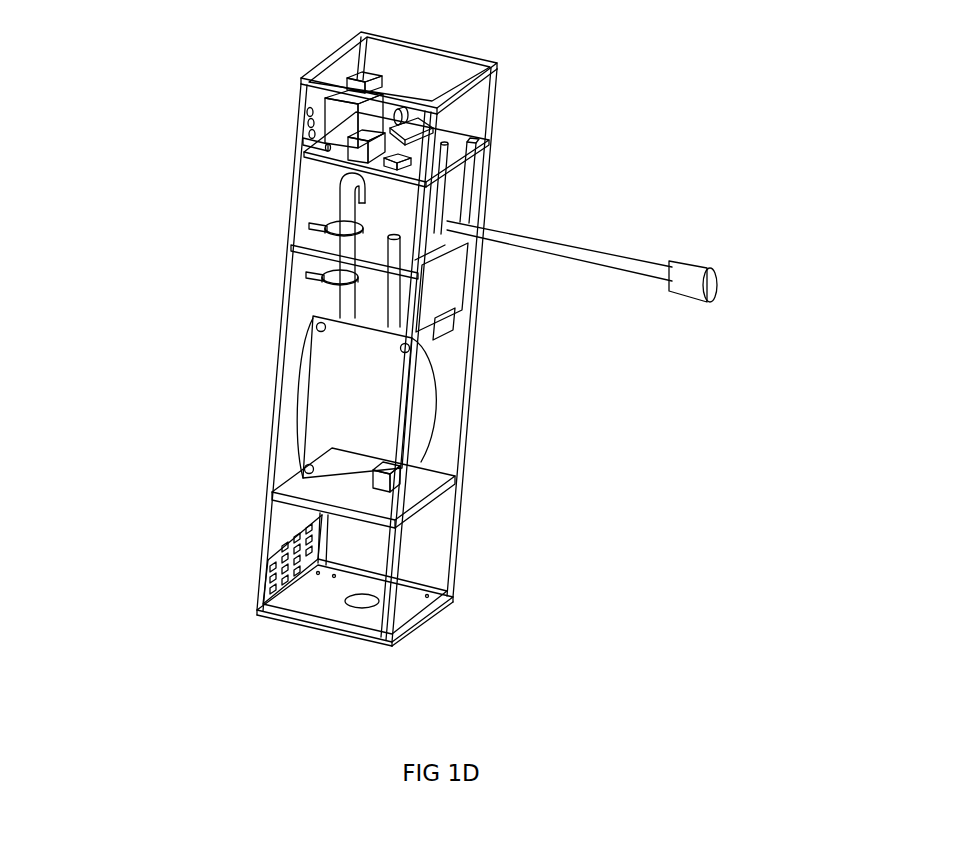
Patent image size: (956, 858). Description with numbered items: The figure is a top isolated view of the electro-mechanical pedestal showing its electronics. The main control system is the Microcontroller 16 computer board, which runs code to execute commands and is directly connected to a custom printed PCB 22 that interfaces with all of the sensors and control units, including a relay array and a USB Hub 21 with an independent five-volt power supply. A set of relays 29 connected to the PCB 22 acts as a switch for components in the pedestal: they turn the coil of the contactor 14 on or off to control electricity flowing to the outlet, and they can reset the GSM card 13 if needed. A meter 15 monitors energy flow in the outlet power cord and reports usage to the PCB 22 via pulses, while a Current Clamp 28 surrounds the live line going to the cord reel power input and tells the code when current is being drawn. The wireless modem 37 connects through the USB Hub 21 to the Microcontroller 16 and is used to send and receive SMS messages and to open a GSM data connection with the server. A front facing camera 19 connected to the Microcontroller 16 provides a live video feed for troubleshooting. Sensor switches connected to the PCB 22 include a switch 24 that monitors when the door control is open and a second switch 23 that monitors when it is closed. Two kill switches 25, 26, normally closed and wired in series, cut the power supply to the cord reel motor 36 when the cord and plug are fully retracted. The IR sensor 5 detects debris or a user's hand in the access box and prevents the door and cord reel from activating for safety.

The IR sensor 5 is at (455, 180).
The 3G GSM card 13 is at (363, 145).
The contactor 14 is at (322, 119).
The meter 15 is at (356, 85).
The Microcontroller 16 is at (470, 160).
The front facing camera 19 is at (434, 140).
The USB Hub 21 is at (350, 167).
The custom printed PCB 22 is at (447, 134).
The second switch 23 is at (565, 247).
The switch 24 is at (340, 295).
The kill switch 25 is at (362, 240).
The kill switch 26 is at (335, 272).
The Current Clamp 28 is at (403, 113).
The relays 29 is at (410, 125).
The cord reel motor 36 is at (385, 477).
The 3G Modem 37 is at (338, 186).